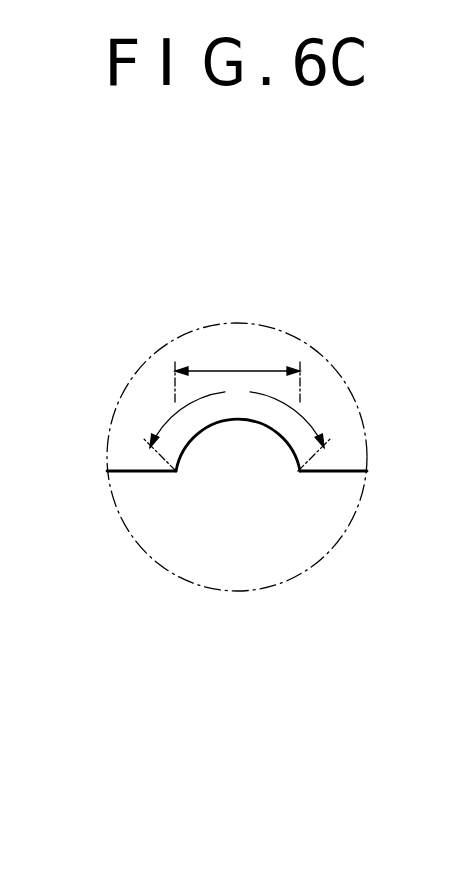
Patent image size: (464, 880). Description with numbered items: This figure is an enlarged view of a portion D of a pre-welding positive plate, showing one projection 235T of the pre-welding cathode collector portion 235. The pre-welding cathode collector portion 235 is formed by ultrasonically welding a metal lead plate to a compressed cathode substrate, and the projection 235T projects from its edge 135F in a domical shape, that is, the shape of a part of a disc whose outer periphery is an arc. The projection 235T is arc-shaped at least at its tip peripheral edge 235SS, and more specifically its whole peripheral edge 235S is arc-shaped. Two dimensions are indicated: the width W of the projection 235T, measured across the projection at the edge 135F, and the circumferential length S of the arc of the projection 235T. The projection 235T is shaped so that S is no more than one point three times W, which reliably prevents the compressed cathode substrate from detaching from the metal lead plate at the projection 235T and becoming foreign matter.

The pre-welding cathode collector portion 235 is at (233, 462).
The peripheral edge 235S is at (286, 442).
The tip peripheral edge 235SS is at (252, 421).
The projection 235T is at (228, 455).
The edge 135F is at (126, 470).
The portion D is at (158, 352).
The width W is at (237, 371).
The circumferential length S is at (237, 412).